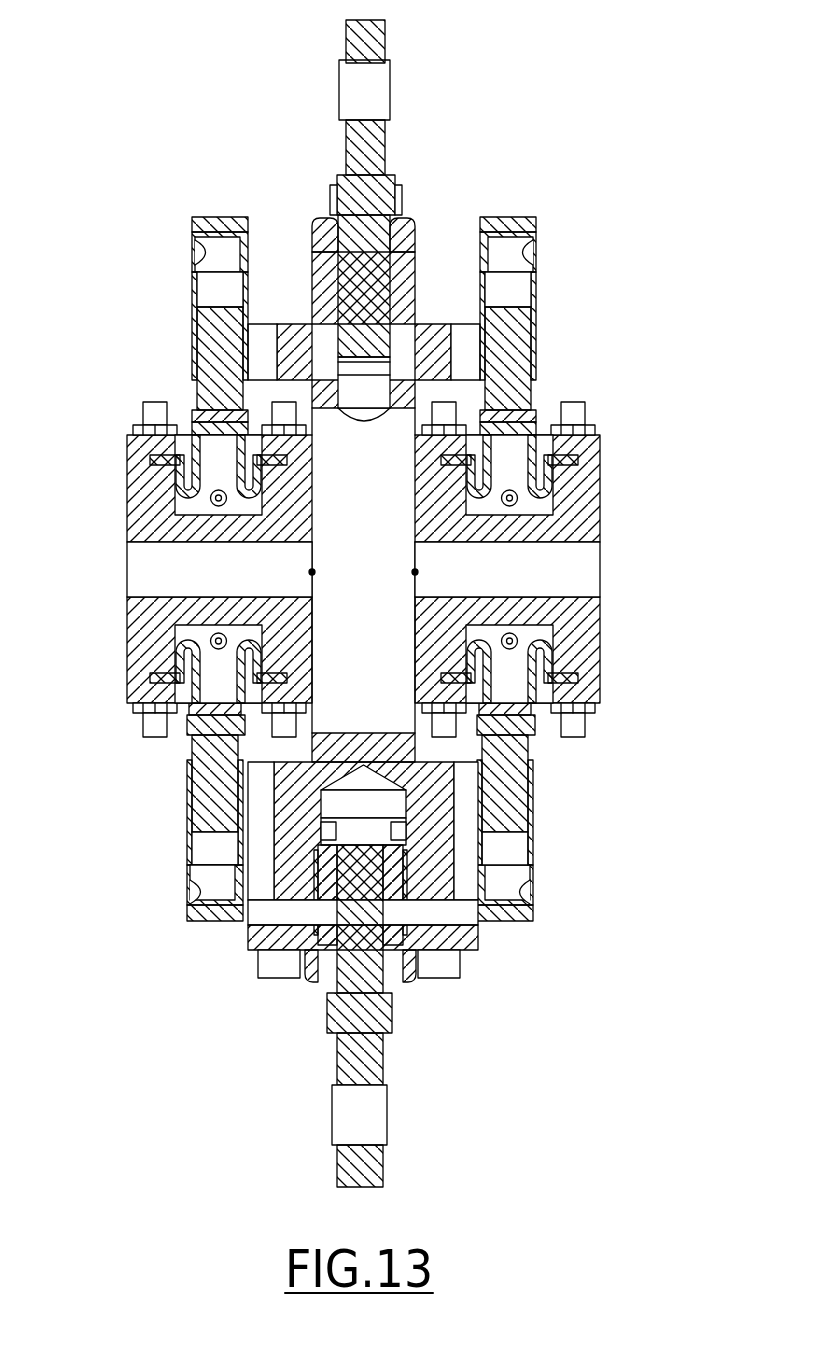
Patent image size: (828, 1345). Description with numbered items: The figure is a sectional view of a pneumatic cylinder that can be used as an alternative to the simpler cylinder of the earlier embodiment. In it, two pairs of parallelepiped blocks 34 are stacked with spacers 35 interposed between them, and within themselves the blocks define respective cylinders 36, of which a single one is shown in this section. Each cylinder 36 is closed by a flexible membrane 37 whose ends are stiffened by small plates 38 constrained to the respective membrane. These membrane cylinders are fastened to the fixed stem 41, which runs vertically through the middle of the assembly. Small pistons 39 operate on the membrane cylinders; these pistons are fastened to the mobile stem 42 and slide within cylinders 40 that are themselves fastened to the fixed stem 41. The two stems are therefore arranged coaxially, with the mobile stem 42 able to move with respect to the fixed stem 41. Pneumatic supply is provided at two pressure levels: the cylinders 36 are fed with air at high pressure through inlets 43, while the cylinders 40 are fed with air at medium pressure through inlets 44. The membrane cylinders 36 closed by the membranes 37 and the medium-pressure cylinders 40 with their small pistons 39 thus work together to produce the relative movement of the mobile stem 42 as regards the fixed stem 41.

The parallelepiped blocks 34 is at (588, 487).
The spacers 35 is at (583, 573).
The cylinders 36 is at (537, 637).
The flexible membranes 37 is at (530, 712).
The small plates 38 is at (515, 825).
The small pistons 39 is at (514, 853).
The cylinders 40 is at (535, 856).
The fixed stem 41 is at (367, 37).
The mobile stem 42 is at (360, 1162).
The inlets 43 is at (513, 647).
The inlets 44 is at (205, 248).